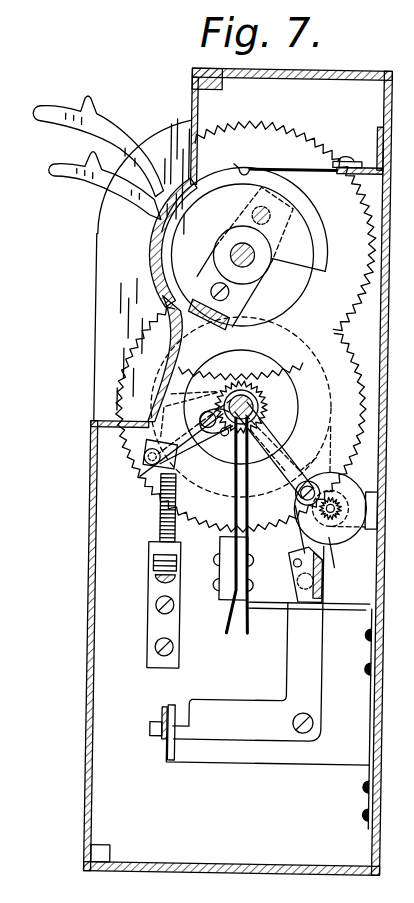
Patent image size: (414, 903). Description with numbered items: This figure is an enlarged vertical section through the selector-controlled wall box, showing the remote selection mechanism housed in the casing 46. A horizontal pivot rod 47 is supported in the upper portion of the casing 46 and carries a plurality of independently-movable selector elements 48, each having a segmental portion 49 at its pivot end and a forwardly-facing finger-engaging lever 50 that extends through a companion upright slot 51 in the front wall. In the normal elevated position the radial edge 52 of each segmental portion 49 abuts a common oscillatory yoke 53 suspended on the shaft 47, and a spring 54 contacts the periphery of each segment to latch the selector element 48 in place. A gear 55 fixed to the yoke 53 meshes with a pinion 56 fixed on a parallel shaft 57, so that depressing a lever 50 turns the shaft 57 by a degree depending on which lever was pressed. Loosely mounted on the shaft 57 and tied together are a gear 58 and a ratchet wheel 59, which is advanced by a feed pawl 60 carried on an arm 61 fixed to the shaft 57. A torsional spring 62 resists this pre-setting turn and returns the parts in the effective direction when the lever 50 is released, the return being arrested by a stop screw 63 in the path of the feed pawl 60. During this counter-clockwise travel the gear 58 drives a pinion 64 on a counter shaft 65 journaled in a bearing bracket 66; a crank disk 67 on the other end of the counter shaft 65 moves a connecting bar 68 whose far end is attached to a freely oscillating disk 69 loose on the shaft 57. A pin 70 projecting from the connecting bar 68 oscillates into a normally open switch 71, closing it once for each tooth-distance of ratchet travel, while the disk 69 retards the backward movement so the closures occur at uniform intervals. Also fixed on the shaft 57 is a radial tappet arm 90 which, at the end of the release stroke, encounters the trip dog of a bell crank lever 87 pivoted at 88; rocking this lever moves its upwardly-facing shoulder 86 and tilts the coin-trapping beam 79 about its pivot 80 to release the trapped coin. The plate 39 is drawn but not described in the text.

The switch plate 39 is at (305, 556).
The wall box or casing 46 is at (92, 452).
The horizontal shaft or pivot rod 47 is at (247, 259).
The selector element 48 is at (242, 255).
The segmental portion 49 is at (318, 236).
The finger-engaging lever 50 is at (92, 120).
The upright slot 51 is at (146, 235).
The radial edge 52 is at (207, 298).
The oscillatory bar or yoke 53 is at (235, 306).
The spring 54 is at (290, 165).
The gear 55 is at (309, 131).
The pinion 56 is at (235, 434).
The shaft 57 is at (258, 412).
The gear 58 is at (337, 422).
The ratchet wheel 59 is at (253, 407).
The feed pawl 60 is at (150, 487).
The arm 61 is at (146, 407).
The torsional spring 62 is at (309, 474).
The stop screw 63 is at (152, 533).
The pinion 64 is at (331, 557).
The counter shaft 65 is at (335, 505).
The bearing bracket 66 is at (371, 527).
The crank disk 67 is at (327, 585).
The connecting link or bar 68 is at (237, 470).
The oscillating disk 69 is at (241, 397).
The pin 70 is at (173, 455).
The normally open switch 71 is at (212, 538).
The vertically-tiltable beam 79 is at (167, 745).
The pivot 80 is at (164, 716).
The upwardly-facing shoulder 86 is at (156, 725).
The tripping bell crank lever 87 is at (289, 663).
The pivot 88 is at (317, 725).
The radial tappet arm 90 is at (251, 488).